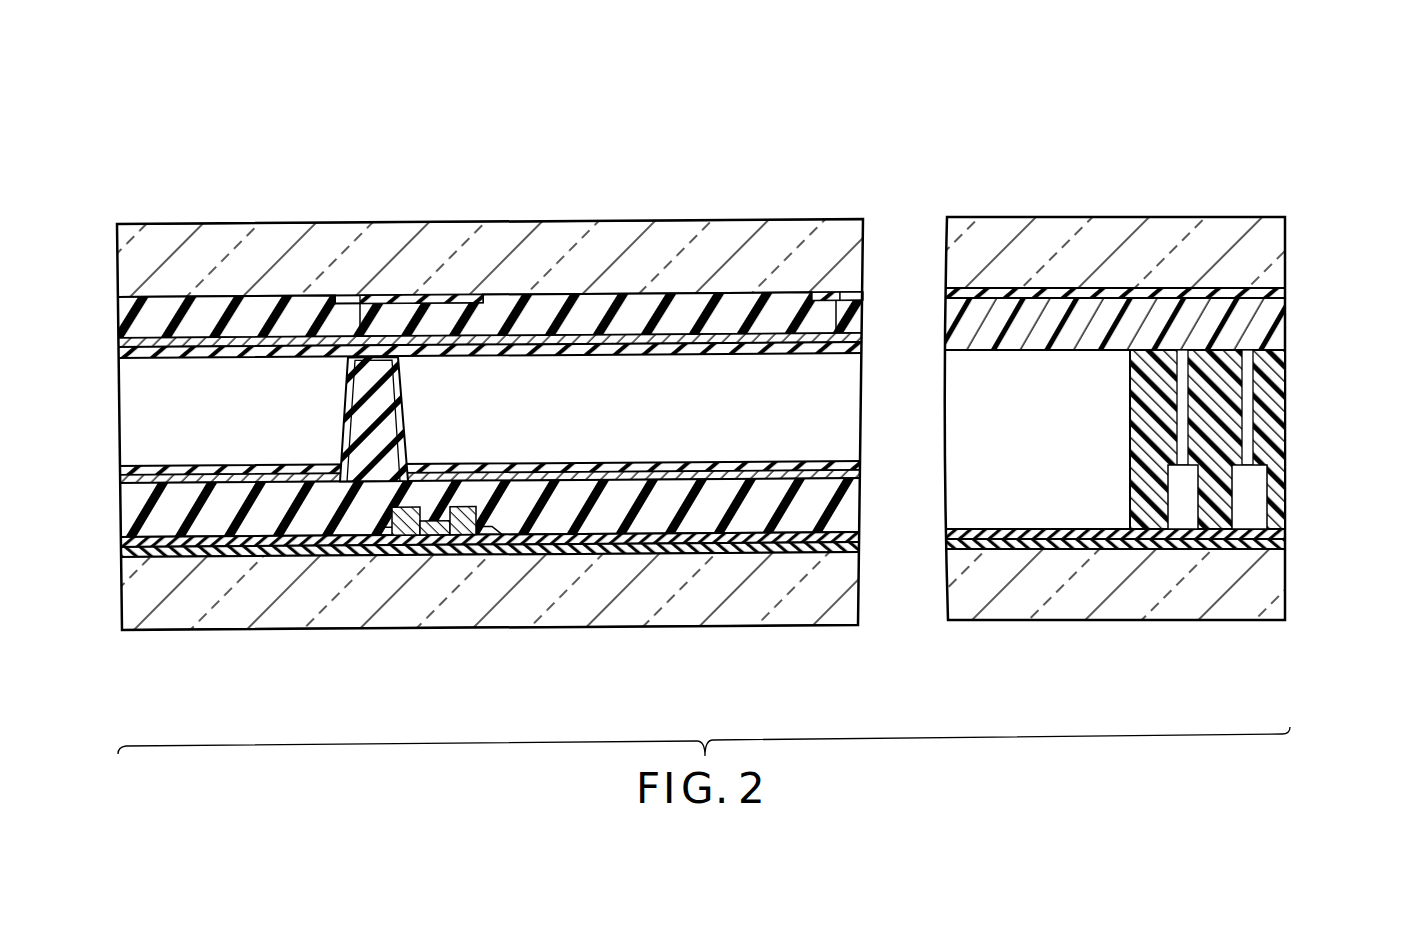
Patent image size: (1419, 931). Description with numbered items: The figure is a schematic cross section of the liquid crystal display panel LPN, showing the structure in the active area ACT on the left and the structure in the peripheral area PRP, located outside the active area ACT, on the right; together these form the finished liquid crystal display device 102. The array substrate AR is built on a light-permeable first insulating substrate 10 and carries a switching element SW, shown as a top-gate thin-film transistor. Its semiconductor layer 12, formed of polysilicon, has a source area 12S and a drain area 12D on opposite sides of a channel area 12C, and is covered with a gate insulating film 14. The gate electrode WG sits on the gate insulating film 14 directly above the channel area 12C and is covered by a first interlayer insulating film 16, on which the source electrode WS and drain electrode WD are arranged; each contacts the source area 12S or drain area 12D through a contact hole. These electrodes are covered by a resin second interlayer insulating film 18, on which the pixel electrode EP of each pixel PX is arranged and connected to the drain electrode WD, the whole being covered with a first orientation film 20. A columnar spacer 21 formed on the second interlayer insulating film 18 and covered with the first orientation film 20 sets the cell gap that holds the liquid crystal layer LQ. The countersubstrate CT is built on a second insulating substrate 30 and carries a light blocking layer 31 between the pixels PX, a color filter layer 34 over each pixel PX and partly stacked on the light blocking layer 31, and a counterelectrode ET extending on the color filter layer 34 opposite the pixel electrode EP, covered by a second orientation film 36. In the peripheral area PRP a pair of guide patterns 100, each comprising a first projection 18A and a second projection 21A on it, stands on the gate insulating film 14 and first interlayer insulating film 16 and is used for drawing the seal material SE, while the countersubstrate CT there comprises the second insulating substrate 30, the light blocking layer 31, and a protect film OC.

The liquid crystal display device 102 is at (886, 63).
The second insulating substrate 30 is at (126, 274).
The light blocking layer 31 is at (430, 314).
The color filter layer 34 is at (186, 328).
The second orientation film 36 is at (120, 353).
The columnar spacer 21 is at (360, 391).
The first orientation film 20 is at (124, 470).
The second interlayer insulating film 18 is at (122, 508).
The first interlayer insulating film 16 is at (122, 543).
The gate insulating film 14 is at (124, 552).
The first insulating substrate 10 is at (126, 590).
The semiconductor layer 12 is at (520, 672).
The source area 12S is at (405, 548).
The channel area 12C is at (432, 548).
The drain area 12D is at (468, 548).
The second projection 21A is at (1250, 400).
The first projection 18A is at (1280, 483).
The guide patterns 100 is at (1340, 372).
The countersubstrate CT is at (108, 238).
The array substrate AR is at (110, 620).
The counterelectrode ET is at (120, 343).
The pixel electrode EP is at (200, 474).
The liquid crystal layer LQ is at (126, 414).
The protect film OC is at (1277, 338).
The seal material SE is at (1150, 510).
The switching element SW is at (386, 575).
The source electrode WS is at (392, 510).
The gate electrode WG is at (433, 524).
The drain electrode WD is at (466, 512).
The liquid crystal display panel LPN is at (879, 417).
The active area ACT is at (860, 143).
The pixel PX is at (840, 202).
The peripheral area PRP is at (1285, 194).